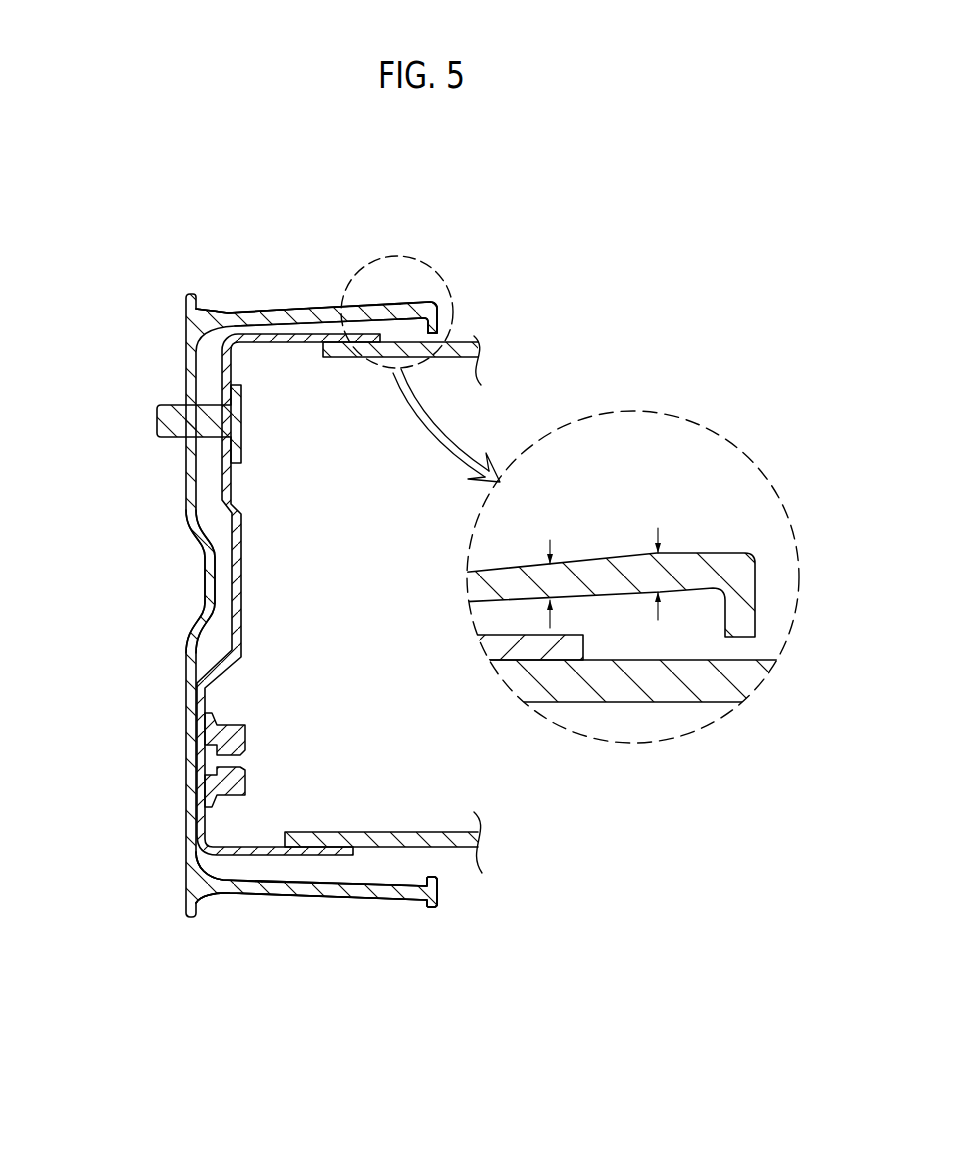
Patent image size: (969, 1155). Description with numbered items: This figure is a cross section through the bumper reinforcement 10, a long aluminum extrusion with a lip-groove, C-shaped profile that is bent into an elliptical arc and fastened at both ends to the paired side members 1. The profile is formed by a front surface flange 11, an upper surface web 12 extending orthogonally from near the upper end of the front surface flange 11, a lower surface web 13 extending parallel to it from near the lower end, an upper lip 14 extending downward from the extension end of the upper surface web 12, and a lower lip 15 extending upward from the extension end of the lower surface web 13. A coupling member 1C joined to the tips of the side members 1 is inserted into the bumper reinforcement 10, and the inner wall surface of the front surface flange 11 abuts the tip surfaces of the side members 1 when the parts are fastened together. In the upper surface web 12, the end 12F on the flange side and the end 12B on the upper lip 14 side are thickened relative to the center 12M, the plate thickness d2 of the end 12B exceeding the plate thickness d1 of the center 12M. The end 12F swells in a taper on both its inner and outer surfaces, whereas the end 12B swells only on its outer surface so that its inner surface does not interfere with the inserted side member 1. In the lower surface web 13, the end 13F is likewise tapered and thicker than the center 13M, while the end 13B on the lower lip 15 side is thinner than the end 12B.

The side member 1 is at (450, 358).
The coupling member 1C is at (245, 571).
The bumper reinforcement 10 is at (128, 335).
The front surface flange 11 is at (210, 589).
The upper surface web 12 is at (353, 257).
The end of upper surface web on front surface flange side 12F is at (214, 309).
The center of upper surface web 12M is at (323, 318).
The end of upper surface web on upper lip side 12B is at (352, 307).
The lower surface web 13 is at (355, 953).
The end of lower surface web on front surface flange side 13F is at (221, 898).
The center of lower surface web 13M is at (317, 897).
The end of lower surface web on lower lip side 13B is at (413, 902).
The upper lip 14 is at (433, 323).
The lower lip 15 is at (438, 886).
The plate thickness of center of upper surface web d1 is at (533, 583).
The plate thickness of end of upper surface web on upper lip side d2 is at (642, 572).